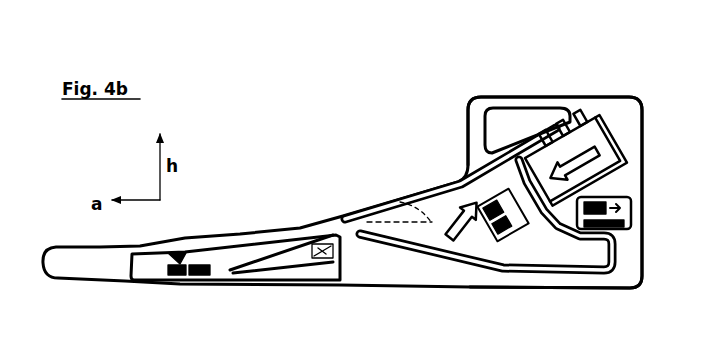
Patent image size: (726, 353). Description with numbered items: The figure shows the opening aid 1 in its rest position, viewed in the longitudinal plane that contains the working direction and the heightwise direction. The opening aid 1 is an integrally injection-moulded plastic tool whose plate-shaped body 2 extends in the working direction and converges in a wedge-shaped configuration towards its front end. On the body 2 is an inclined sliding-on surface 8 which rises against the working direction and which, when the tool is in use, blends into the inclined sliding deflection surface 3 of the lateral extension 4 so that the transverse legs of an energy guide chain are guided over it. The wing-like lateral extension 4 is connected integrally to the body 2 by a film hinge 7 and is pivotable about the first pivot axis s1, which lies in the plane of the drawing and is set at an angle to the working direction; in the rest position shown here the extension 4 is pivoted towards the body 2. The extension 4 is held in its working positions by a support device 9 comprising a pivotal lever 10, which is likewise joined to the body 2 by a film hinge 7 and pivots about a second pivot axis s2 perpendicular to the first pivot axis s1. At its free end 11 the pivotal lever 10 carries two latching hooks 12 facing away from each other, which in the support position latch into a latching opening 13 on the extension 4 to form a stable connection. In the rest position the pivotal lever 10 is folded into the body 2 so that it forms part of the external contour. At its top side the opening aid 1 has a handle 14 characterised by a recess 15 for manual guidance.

The opening aid 1 is at (286, 70).
The body 2 is at (312, 213).
The inclined sliding deflection surface 3 is at (486, 253).
The lateral extension 4 is at (563, 268).
The film hinge 7 is at (442, 190).
The inclined sliding-on surface 8 is at (249, 236).
The support device 9 is at (615, 148).
The pivotal lever 10 is at (626, 171).
The free end 11 is at (615, 160).
The latching hooks 12 is at (568, 128).
The latching opening 13 is at (493, 196).
The handle 14 is at (511, 92).
The recess 15 is at (498, 106).
The first pivot axis s1 is at (421, 194).
The second pivot axis s2 is at (538, 165).